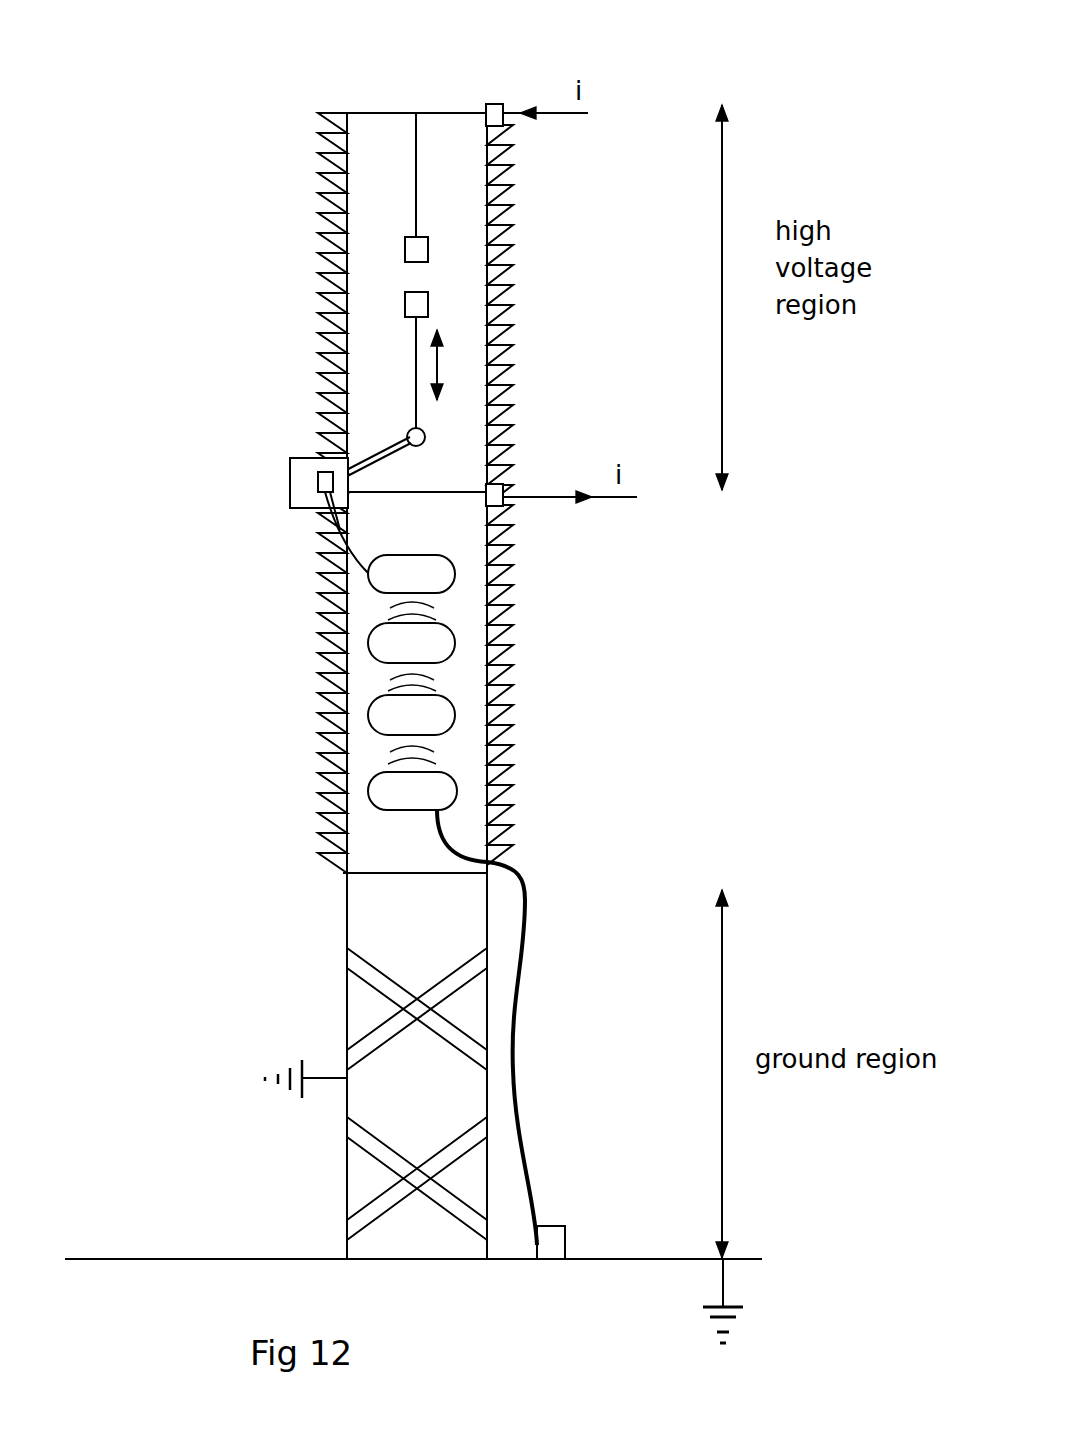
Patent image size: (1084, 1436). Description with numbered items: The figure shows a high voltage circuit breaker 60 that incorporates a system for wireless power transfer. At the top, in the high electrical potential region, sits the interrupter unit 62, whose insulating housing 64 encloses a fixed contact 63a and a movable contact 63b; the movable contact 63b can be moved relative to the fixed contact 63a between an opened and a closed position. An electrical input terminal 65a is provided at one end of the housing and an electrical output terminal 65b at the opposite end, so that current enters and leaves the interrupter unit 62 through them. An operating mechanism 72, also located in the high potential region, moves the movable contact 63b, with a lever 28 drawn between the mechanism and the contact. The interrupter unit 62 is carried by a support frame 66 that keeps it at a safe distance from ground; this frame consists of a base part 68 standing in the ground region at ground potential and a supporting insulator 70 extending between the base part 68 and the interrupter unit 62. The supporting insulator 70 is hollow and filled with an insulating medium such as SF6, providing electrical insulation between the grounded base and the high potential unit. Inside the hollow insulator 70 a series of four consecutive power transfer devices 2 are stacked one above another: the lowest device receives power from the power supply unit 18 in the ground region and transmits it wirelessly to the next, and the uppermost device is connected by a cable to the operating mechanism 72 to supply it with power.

The high voltage circuit breaker 60 is at (185, 322).
The supporting insulator 70 is at (338, 693).
The interrupter unit 62 is at (497, 265).
The insulating housing 64 is at (505, 193).
The support frame 66 is at (527, 772).
The electrical input terminal 65a is at (493, 103).
The electrical output terminal 65b is at (500, 500).
The fixed contact 63a is at (410, 250).
The movable contact 63b is at (405, 306).
The lever 28 is at (350, 448).
The operating mechanism 72 is at (303, 487).
The power transfer devices 2 is at (445, 790).
The base part 68 is at (345, 1003).
The power supply unit 18 is at (552, 1243).